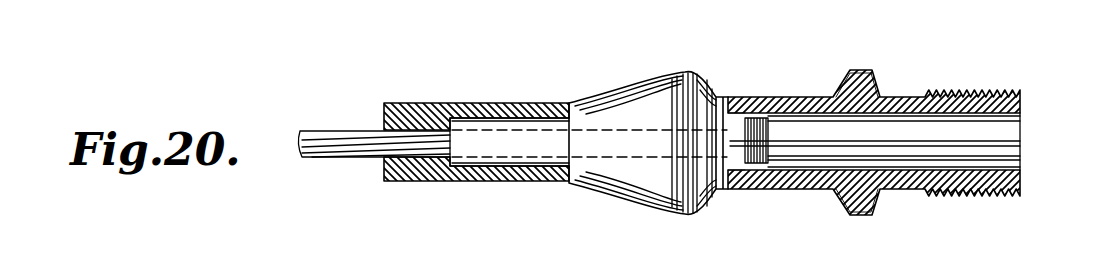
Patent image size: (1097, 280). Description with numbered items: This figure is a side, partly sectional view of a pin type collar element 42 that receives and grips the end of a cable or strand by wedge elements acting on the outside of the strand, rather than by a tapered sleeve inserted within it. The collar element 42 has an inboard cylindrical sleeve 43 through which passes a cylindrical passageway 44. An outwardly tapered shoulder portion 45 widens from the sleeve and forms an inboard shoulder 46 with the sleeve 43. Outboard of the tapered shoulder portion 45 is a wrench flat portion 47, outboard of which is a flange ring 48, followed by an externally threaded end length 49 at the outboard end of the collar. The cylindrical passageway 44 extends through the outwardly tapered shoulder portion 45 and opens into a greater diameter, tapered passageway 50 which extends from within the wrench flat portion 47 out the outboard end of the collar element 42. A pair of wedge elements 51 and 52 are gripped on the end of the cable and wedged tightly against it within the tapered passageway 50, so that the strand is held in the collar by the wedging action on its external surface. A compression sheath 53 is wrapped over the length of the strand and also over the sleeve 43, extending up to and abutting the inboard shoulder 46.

The collar element 42 is at (742, 78).
The inboard cylindrical sleeve 43 is at (474, 118).
The cylindrical passageway 44 is at (302, 131).
The outwardly tapered shoulder portion 45 is at (688, 72).
The inboard shoulder 46 is at (560, 182).
The wrench flat portion 47 is at (808, 98).
The flange ring 48 is at (863, 70).
The externally threaded end length 49 is at (990, 90).
The tapered passageway 50 is at (756, 166).
The wedge element 51 is at (1021, 124).
The wedge element 52 is at (1021, 152).
The compression sheath 53 is at (432, 178).